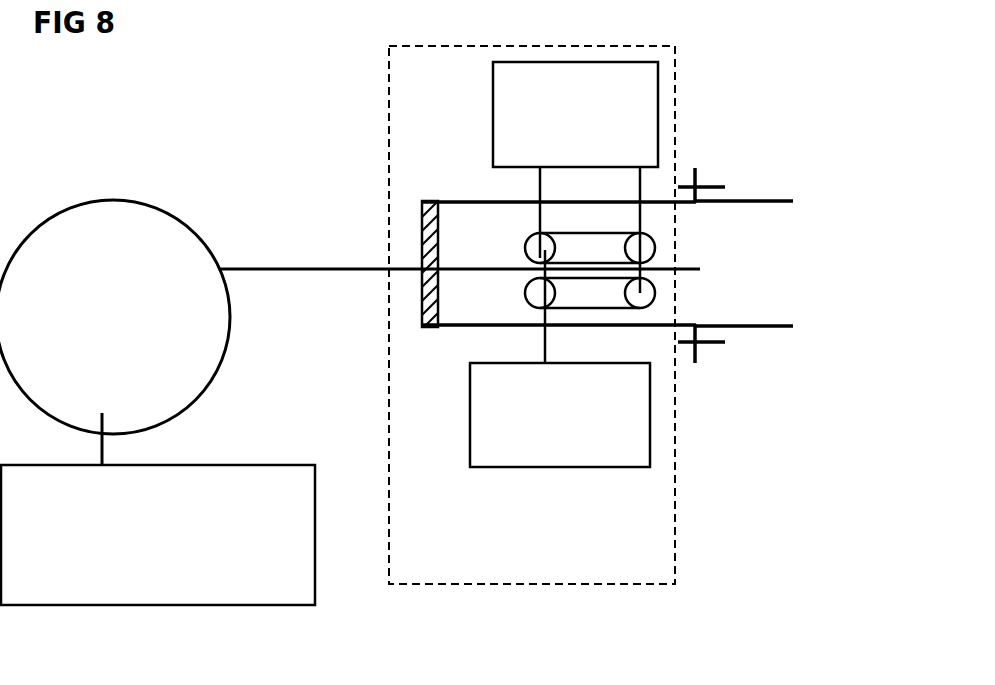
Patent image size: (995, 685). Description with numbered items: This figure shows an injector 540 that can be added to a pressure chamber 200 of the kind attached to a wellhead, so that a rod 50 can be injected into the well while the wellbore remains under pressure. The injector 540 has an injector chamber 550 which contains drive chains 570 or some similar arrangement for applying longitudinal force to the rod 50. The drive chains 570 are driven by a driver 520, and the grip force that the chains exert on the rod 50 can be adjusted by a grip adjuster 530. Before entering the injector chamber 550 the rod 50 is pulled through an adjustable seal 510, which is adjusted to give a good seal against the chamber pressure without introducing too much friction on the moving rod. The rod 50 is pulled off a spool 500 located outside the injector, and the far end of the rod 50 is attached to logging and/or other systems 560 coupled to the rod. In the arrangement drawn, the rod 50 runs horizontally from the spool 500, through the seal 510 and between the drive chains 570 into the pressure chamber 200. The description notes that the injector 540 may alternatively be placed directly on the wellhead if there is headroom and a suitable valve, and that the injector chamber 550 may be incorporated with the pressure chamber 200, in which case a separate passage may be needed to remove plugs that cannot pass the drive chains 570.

The rod 50 is at (312, 268).
The pressure chamber 200 is at (764, 265).
The spool 500 is at (115, 333).
The seal 510 is at (423, 212).
The driver 520 is at (575, 177).
The adjuster 530 is at (560, 358).
The injector 540 is at (532, 315).
The injector chamber 550 is at (648, 326).
The logging and/or other systems 560 is at (158, 535).
The drive chains 570 is at (510, 248).